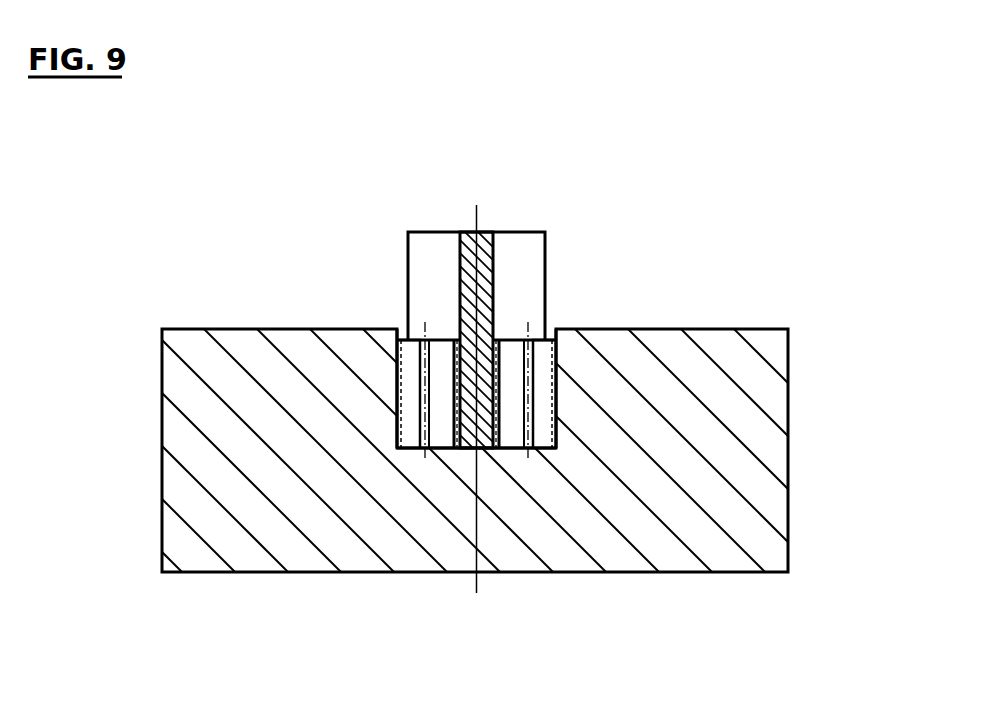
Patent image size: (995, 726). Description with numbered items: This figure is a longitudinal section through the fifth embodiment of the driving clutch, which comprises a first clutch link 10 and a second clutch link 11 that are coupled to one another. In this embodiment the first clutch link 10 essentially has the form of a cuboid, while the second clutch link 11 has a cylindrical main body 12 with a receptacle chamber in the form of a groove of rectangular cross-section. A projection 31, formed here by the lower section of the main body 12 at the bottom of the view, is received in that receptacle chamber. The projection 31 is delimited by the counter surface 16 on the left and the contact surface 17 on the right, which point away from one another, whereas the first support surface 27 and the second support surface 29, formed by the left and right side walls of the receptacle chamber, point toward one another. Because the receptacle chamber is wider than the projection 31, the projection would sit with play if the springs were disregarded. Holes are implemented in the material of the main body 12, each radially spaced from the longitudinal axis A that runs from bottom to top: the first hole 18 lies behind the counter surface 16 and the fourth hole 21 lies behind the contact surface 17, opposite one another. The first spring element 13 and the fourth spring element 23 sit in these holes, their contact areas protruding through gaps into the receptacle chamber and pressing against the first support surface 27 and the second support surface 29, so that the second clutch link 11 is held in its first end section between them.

The first clutch link 10 is at (468, 205).
The second clutch link 11 is at (183, 263).
The main body 12 is at (480, 232).
The first spring element 13 is at (397, 416).
The counter surface 16 is at (397, 329).
The contact surface 17 is at (557, 329).
The first hole 18 is at (460, 262).
The fourth hole 21 is at (493, 262).
The fourth spring element 23 is at (556, 416).
The first support surface 27 is at (401, 383).
The second support surface 29 is at (552, 383).
The projection 31 is at (460, 450).
The longitudinal axis A is at (472, 588).